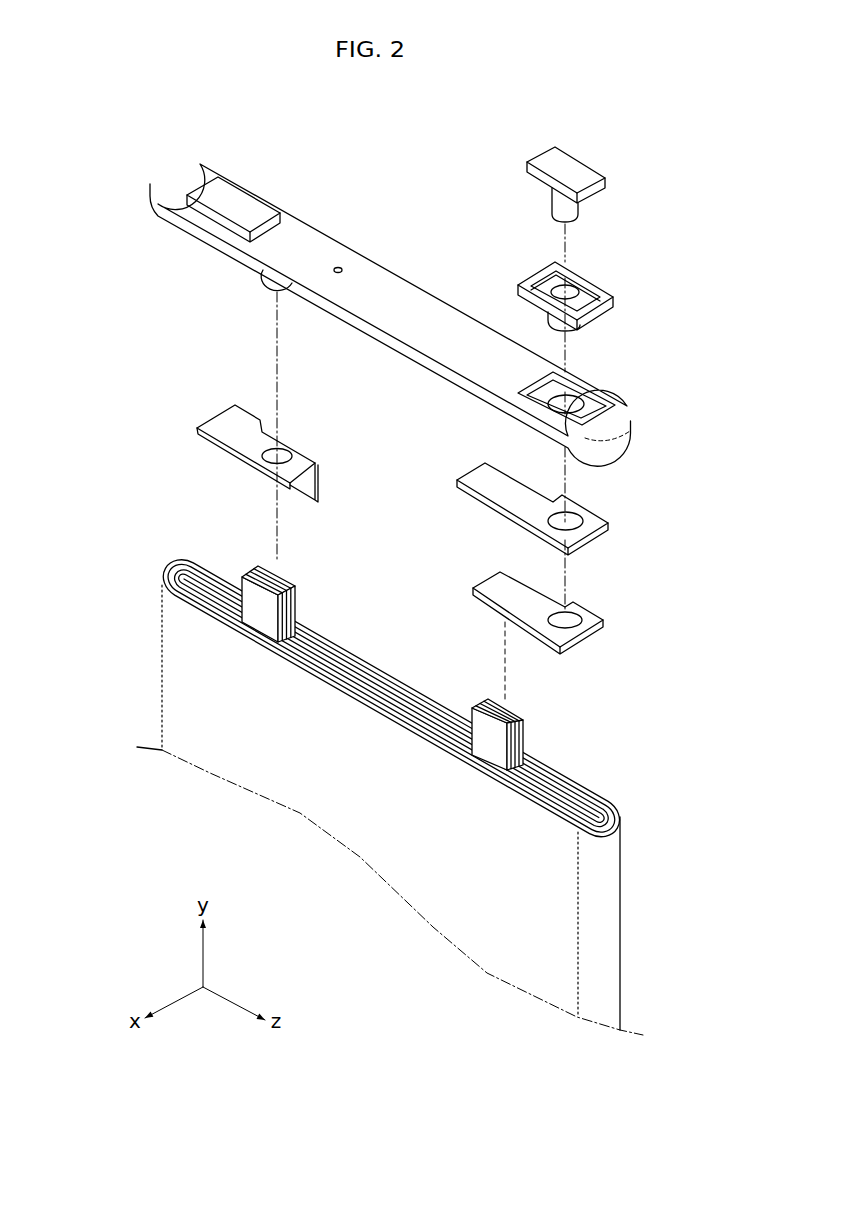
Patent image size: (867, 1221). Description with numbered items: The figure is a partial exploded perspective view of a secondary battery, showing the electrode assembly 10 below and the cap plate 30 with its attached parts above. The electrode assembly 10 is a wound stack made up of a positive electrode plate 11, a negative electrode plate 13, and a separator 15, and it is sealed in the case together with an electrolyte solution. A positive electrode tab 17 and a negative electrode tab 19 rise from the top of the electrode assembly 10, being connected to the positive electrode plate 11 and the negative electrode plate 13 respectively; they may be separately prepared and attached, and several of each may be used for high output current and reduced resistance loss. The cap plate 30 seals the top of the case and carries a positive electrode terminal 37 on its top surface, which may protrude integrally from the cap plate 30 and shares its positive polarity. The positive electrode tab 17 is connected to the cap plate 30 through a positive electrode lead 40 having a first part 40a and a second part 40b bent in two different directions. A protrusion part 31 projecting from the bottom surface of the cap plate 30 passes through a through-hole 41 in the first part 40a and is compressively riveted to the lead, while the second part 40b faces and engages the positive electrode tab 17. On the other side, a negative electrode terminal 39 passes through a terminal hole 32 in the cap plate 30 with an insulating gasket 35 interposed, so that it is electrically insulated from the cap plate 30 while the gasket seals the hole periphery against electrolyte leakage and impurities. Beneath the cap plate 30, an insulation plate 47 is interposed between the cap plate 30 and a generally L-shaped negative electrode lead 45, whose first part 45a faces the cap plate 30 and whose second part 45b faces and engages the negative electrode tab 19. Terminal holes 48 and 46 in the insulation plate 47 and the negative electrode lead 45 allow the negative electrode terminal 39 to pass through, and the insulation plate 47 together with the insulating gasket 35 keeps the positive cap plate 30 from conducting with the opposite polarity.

The electrode assembly 10 is at (344, 780).
The positive electrode plate 11 is at (174, 592).
The negative electrode plate 13 is at (180, 563).
The separator 15 is at (170, 578).
The positive electrode tab 17 is at (262, 627).
The negative electrode tab 19 is at (490, 758).
The cap plate 30 is at (150, 163).
The protrusion part 31 is at (258, 277).
The terminal hole 32 is at (577, 393).
The insulating gasket 35 is at (590, 283).
The positive electrode terminal 37 is at (242, 198).
The negative electrode terminal 39 is at (572, 170).
The positive electrode lead 40 is at (267, 429).
The first part 40a is at (303, 455).
The second part 40b is at (320, 481).
The through-hole 41 is at (252, 456).
The negative electrode lead 45 is at (549, 616).
The first part 45a is at (490, 583).
The second part 45b is at (498, 604).
The terminal hole 46 is at (580, 634).
The insulation plate 47 is at (563, 515).
The terminal hole 48 is at (577, 512).